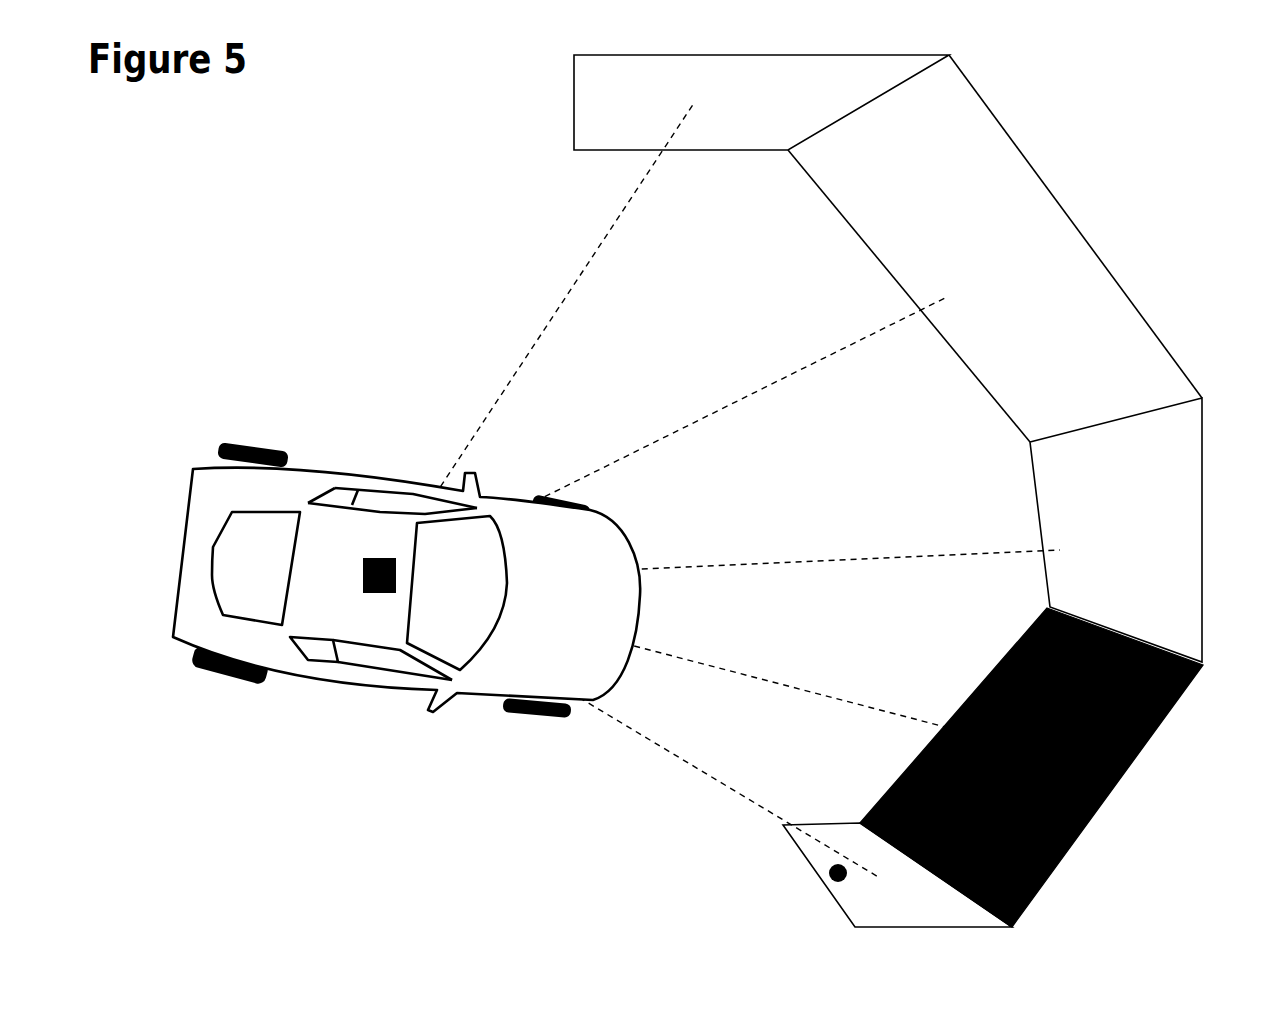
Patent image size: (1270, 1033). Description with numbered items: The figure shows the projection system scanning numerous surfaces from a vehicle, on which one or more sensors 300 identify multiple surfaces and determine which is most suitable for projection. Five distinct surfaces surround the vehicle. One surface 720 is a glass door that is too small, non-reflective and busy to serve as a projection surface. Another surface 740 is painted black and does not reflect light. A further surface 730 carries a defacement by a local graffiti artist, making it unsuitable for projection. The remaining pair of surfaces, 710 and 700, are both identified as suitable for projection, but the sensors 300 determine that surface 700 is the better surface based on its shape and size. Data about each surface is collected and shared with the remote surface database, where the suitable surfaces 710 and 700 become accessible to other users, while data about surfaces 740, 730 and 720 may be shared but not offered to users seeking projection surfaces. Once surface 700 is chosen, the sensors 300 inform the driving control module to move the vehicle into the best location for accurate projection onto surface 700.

The sensor 300 is at (377, 566).
The surface 700 is at (995, 248).
The surface 710 is at (761, 88).
The surface 720 is at (897, 889).
The surface 730 is at (1141, 530).
The surface 740 is at (1031, 767).